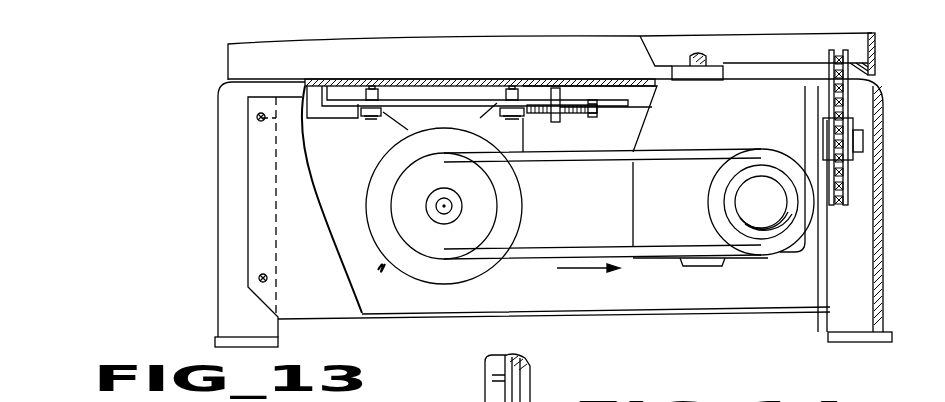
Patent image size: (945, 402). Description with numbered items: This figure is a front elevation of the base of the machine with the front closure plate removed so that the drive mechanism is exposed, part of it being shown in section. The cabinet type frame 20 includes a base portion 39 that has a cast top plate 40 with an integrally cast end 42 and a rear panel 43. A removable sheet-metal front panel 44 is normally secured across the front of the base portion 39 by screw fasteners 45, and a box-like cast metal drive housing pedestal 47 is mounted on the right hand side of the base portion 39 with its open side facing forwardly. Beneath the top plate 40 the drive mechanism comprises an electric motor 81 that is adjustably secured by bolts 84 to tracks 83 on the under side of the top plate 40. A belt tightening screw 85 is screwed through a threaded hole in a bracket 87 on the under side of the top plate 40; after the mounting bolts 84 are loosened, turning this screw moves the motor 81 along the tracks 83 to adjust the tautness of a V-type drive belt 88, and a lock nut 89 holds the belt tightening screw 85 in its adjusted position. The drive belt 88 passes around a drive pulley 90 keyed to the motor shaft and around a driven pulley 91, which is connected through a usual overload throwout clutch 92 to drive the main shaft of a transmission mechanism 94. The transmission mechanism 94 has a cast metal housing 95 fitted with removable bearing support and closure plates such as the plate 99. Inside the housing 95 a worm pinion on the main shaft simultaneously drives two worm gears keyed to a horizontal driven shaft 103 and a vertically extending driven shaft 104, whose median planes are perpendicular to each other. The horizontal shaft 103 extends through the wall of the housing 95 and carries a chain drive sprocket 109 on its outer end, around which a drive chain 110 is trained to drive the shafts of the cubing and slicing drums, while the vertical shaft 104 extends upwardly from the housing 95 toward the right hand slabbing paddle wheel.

In FIG. 13, the cabinet type frame 20 is at (262, 60).
In FIG. 13, the base portion 39 is at (228, 196).
In FIG. 13, the cast top plate 40 is at (598, 80).
In FIG. 13, the integrally cast end 42 is at (884, 216).
In FIG. 13, the rear panel 43 is at (585, 301).
In FIG. 13, the removable sheet-metal front panel 44 is at (323, 256).
In FIG. 13, the screw fasteners 45 is at (257, 117).
In FIG. 13, the drive housing pedestal 47 is at (876, 50).
In FIG. 13, the electric motor 81 is at (385, 166).
In FIG. 13, the tracks 83 is at (440, 100).
In FIG. 13, the mounting bolts 84 is at (376, 62).
In FIG. 13, the belt tightening screw 85 is at (598, 106).
In FIG. 13, the bracket 87 is at (555, 122).
In FIG. 13, the V-type drive belt 88 is at (585, 154).
In FIG. 13, the lock nut 89 is at (561, 118).
In FIG. 13, the drive pulley 90 is at (460, 185).
In FIG. 13, the driven pulley 91 is at (758, 148).
In FIG. 13, the overload throwout clutch 92 is at (778, 206).
In FIG. 13, the transmission mechanism 94 is at (652, 204).
In FIG. 13, the transmission housing 95 is at (744, 119).
In FIG. 14, the closure plate 99 is at (460, 400).
In FIG. 13, the horizontal driven shaft 103 is at (862, 142).
In FIG. 13, the vertically extending driven shaft 104 is at (703, 58).
In FIG. 13, the chain drive sprocket 109 is at (845, 125).
In FIG. 13, the drive chain 110 is at (838, 92).